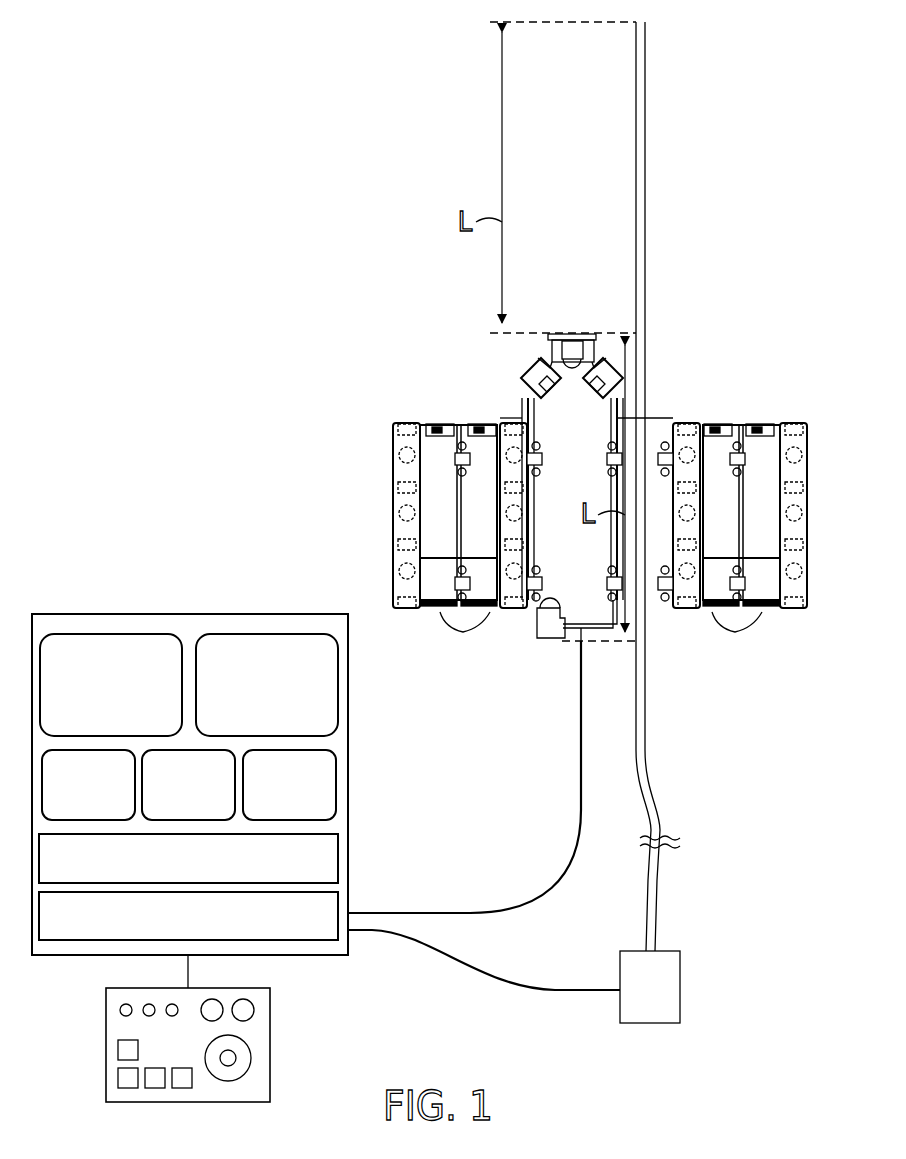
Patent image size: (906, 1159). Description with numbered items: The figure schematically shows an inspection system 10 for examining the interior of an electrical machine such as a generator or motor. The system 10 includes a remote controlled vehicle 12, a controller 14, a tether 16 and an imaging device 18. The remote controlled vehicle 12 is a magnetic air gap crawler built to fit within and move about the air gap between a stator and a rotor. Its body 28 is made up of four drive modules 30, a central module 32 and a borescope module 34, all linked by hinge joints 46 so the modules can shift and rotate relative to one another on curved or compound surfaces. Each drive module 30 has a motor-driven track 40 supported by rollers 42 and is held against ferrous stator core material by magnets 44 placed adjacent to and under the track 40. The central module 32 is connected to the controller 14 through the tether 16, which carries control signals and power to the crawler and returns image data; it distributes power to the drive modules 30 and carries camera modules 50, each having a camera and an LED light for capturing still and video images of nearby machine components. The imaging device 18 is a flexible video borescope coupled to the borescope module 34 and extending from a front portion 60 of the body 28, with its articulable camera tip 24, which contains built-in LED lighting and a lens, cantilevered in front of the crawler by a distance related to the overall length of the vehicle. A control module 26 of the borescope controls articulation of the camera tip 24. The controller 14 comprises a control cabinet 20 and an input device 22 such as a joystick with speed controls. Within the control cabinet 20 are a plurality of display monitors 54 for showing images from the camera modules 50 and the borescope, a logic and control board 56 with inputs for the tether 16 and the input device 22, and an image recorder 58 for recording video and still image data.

The inspection system 10 is at (150, 283).
The remote controlled vehicle 12 is at (415, 352).
The controller 14 is at (430, 1012).
The tether 16 is at (580, 750).
The imaging device 18 is at (646, 750).
The control cabinet 20 is at (174, 614).
The input device 22 is at (271, 1005).
The camera tip 24 is at (646, 22).
The control module 26 is at (681, 995).
The body 28 is at (777, 722).
The drive module 30 is at (463, 633).
The central module 32 is at (560, 592).
The borescope module 34 is at (647, 418).
The track 40 is at (405, 610).
The rollers 42 is at (397, 430).
The magnets 44 is at (425, 560).
The hinge joints 46 is at (458, 455).
The camera modules 50 is at (570, 334).
The display monitors 54 is at (72, 634).
The logic and control board 56 is at (348, 900).
The image recorder 58 is at (348, 850).
The front portion 60 is at (740, 340).